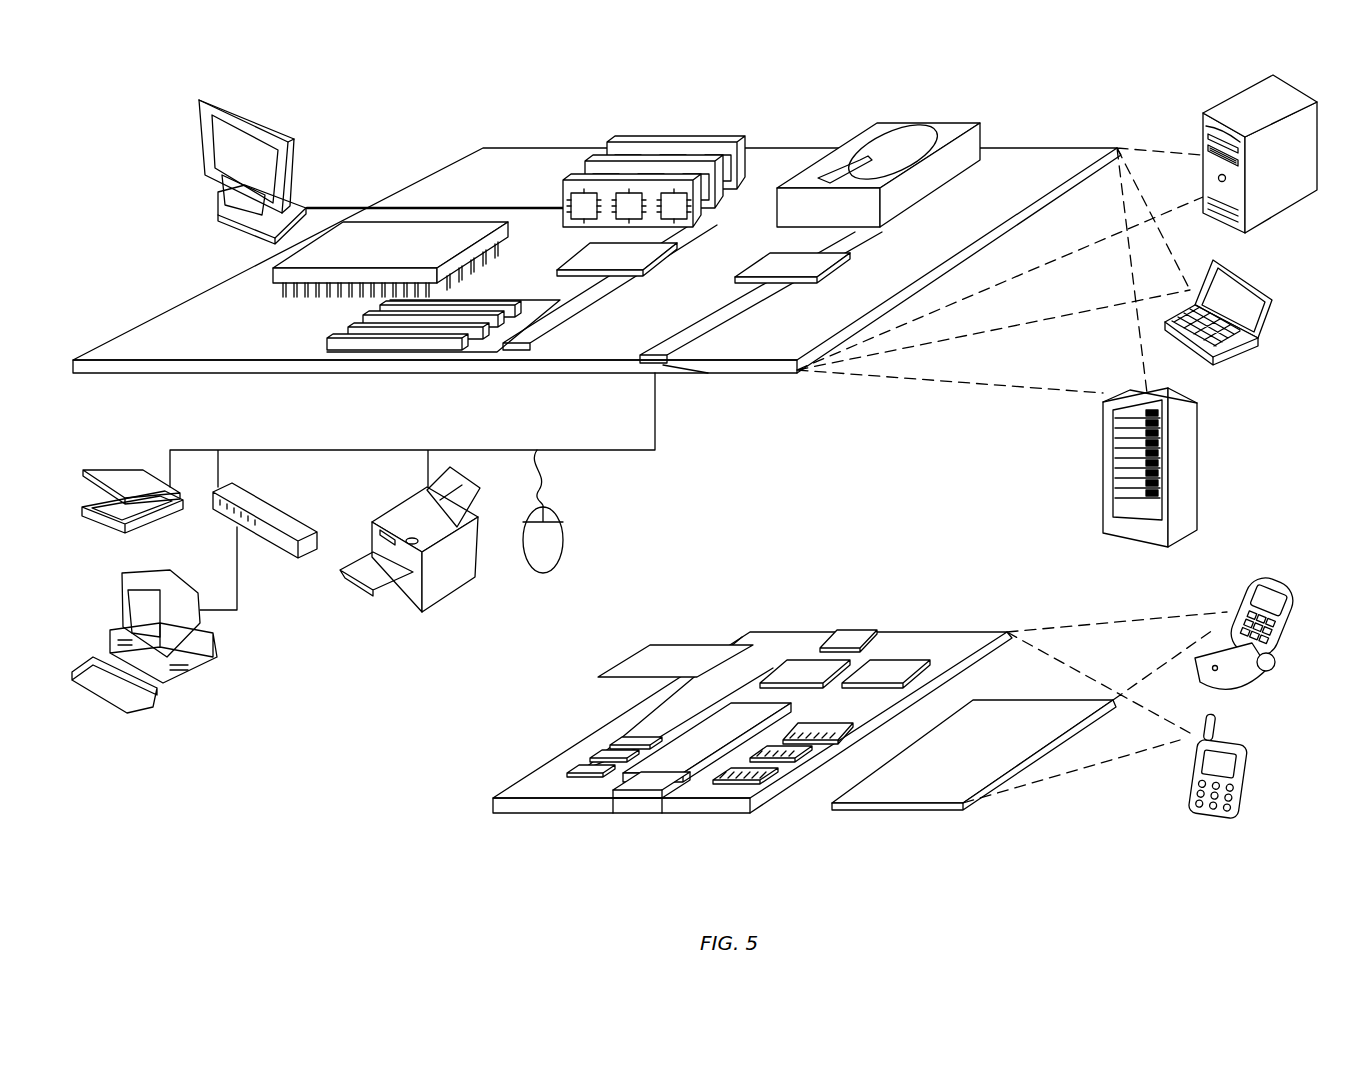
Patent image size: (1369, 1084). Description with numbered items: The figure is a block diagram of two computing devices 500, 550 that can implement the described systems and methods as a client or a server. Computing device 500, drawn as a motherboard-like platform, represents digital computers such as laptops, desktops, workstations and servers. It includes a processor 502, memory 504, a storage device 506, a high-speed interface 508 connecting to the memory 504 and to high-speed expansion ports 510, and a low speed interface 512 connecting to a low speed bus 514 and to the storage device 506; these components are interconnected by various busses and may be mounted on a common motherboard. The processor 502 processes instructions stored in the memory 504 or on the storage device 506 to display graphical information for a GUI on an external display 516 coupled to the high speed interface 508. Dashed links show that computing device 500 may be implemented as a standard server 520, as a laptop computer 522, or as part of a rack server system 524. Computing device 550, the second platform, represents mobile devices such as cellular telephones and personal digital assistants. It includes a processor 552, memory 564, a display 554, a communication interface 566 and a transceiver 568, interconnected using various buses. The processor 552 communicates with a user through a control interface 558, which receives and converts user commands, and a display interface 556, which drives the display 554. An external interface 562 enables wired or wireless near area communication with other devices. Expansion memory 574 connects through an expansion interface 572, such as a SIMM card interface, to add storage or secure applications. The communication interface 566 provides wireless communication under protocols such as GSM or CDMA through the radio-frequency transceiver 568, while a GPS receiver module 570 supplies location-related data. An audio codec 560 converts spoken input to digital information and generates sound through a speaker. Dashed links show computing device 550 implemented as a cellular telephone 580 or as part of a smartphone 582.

The computing device 500 is at (406, 120).
The processor 502 is at (270, 272).
The memory 504 is at (622, 143).
The storage device 506 is at (866, 132).
The high-speed interface 508 is at (600, 256).
The high-speed expansion ports 510 is at (335, 336).
The low speed interface 512 is at (778, 268).
The low speed bus 514 is at (708, 373).
The display 516 is at (210, 96).
The standard server 520 is at (1202, 135).
The laptop computer 522 is at (1272, 292).
The rack server system 524 is at (1103, 493).
The computing device 550 is at (470, 812).
The processor 552 is at (680, 776).
The display 554 is at (935, 785).
The display interface 556 is at (750, 784).
The control interface 558 is at (785, 762).
The audio codec 560 is at (815, 730).
The external interface 562 is at (642, 800).
The memory 564 is at (585, 756).
The communication interface 566 is at (806, 673).
The transceiver 568 is at (885, 668).
The GPS receiver module 570 is at (857, 640).
The expansion interface 572 is at (738, 650).
The expansion memory 574 is at (644, 650).
The cellular telephone 580 is at (1238, 600).
The smartphone 582 is at (1196, 774).